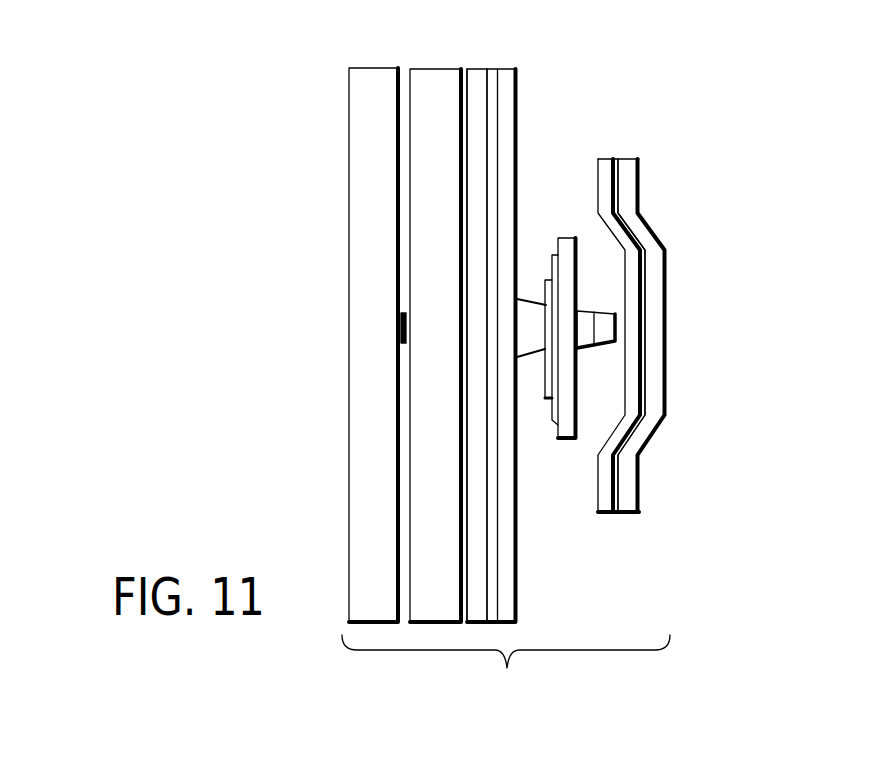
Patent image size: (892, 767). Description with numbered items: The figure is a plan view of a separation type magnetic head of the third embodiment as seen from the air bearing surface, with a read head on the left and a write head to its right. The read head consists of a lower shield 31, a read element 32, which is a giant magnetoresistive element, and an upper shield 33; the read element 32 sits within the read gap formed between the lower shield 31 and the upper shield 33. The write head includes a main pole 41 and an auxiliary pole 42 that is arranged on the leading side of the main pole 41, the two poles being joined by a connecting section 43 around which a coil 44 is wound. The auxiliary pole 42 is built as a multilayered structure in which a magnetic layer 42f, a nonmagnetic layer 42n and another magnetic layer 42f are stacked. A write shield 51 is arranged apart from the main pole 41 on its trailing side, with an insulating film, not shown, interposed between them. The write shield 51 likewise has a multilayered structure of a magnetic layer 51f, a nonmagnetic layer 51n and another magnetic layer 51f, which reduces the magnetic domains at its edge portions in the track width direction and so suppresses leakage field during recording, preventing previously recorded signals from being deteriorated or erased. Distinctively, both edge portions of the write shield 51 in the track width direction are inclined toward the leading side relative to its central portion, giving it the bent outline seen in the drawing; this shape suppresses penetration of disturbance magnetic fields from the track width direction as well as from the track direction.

The lower shield 31 is at (353, 88).
The read element 32 is at (398, 331).
The upper shield 33 is at (430, 77).
The auxiliary pole 42 is at (506, 325).
The magnetic layer 42f is at (478, 76).
The nonmagnetic layer 42n is at (493, 76).
The connecting section 43 is at (537, 305).
The coil 44 is at (566, 440).
The main pole 41 is at (602, 318).
The write shield 51 is at (620, 344).
The magnetic layer 51f is at (604, 158).
The nonmagnetic layer 51n is at (617, 158).